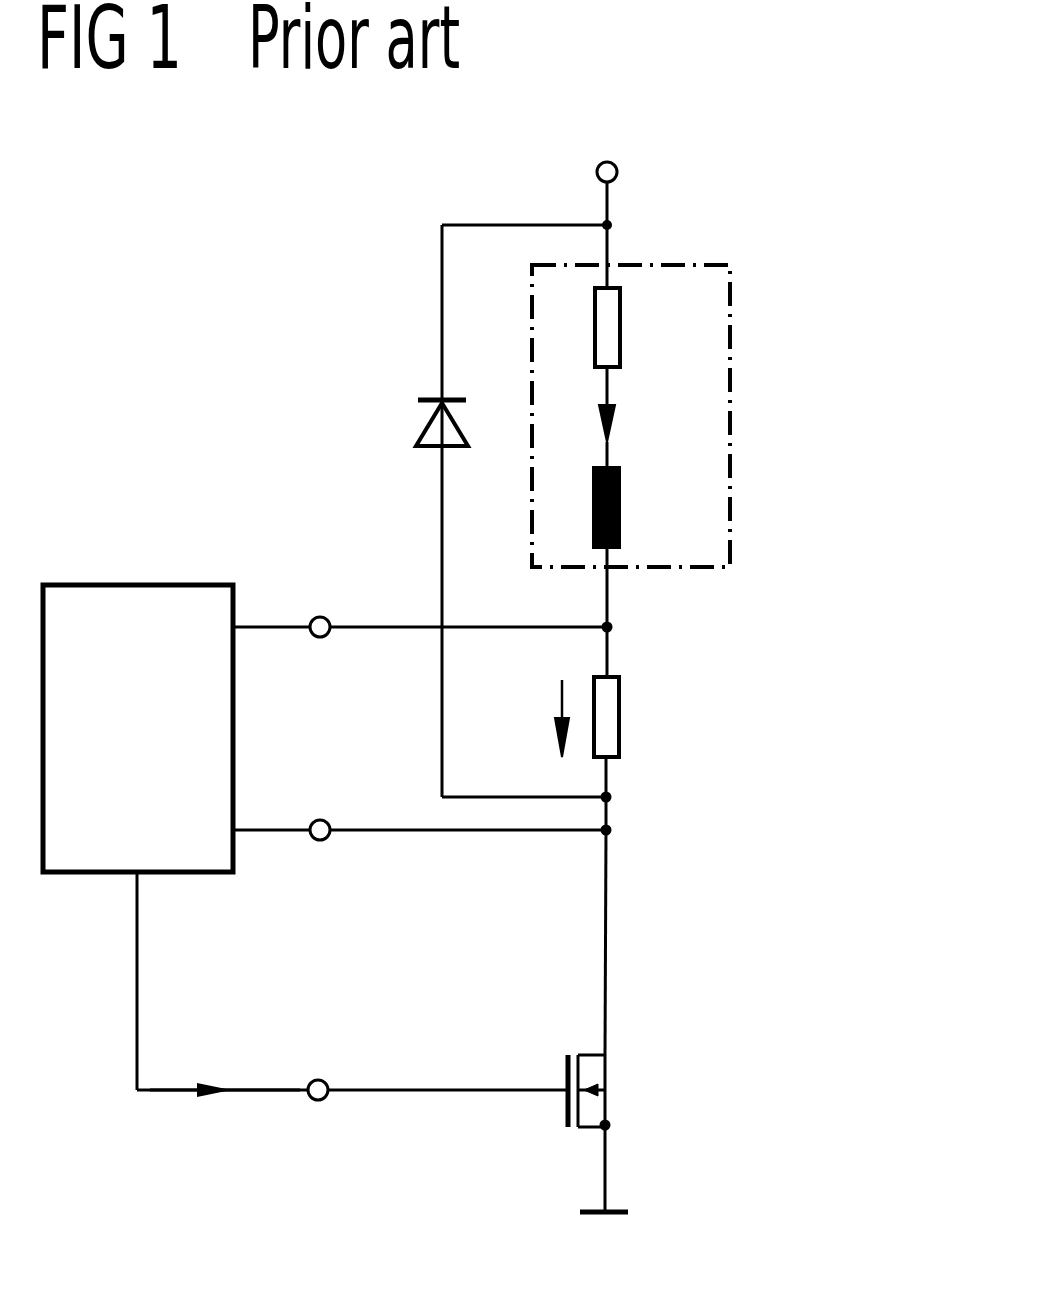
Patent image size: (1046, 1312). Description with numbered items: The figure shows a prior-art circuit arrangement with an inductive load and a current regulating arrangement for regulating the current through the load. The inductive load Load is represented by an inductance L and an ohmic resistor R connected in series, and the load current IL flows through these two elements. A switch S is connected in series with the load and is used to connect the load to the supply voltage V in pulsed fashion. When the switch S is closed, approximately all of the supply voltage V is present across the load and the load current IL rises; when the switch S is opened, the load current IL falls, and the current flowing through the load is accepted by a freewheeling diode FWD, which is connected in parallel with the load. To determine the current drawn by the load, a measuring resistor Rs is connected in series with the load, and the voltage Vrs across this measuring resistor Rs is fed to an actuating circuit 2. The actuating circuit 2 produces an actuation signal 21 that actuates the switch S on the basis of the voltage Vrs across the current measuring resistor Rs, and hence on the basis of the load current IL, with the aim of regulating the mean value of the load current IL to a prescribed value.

The actuating circuit 2 is at (131, 585).
The actuation signal 21 is at (210, 1087).
The supply voltage V is at (607, 140).
The freewheeling diode FWD is at (425, 421).
The inductive load Load is at (731, 400).
The ohmic resistor R is at (621, 325).
The load current IL is at (614, 422).
The inductance L is at (621, 508).
The measuring resistor Rs is at (620, 715).
The voltage across the current measuring resistor Vrs is at (527, 718).
The switch S is at (582, 1067).